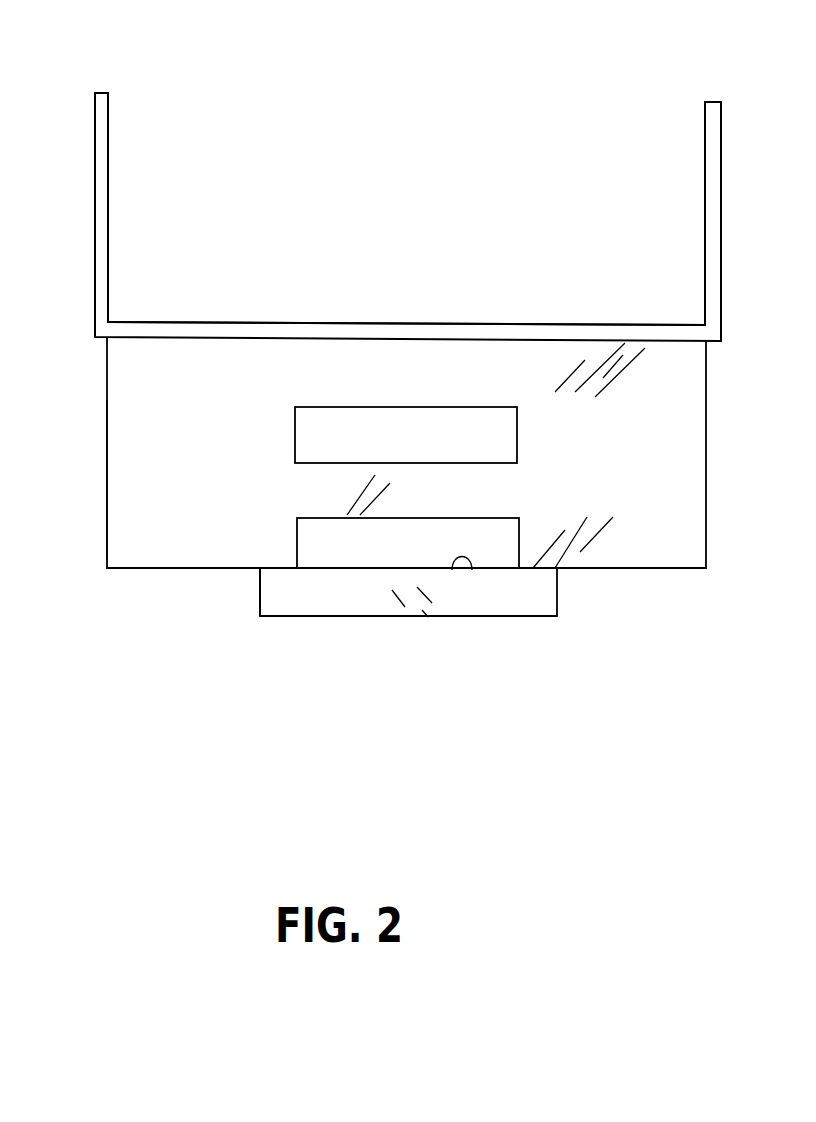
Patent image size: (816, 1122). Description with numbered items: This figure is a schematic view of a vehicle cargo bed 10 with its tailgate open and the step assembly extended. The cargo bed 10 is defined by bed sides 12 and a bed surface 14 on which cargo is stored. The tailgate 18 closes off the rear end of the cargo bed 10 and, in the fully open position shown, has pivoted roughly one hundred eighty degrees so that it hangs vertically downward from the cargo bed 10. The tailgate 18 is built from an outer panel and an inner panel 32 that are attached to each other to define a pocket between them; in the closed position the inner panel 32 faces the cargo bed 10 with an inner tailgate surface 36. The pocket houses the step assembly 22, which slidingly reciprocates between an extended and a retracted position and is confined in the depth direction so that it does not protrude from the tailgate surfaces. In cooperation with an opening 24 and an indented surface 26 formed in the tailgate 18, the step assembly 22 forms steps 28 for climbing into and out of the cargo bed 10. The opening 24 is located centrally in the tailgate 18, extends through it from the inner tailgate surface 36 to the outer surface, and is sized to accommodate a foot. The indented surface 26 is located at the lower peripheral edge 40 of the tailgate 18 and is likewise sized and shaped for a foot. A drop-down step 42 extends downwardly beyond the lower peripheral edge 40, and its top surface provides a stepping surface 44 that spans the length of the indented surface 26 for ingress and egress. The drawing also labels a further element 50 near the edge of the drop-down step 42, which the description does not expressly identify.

The cargo bed 10 is at (101, 93).
The bed sides 12 is at (110, 148).
The bed surface 14 is at (363, 323).
The tailgate 18 is at (133, 371).
The step assembly 22 is at (295, 702).
The opening 24 is at (405, 420).
The indented surface 26 is at (510, 517).
The steps 28 is at (487, 460).
The inner panel 32 is at (143, 443).
The inner tailgate surface 36 is at (140, 497).
The lower peripheral edge 40 is at (158, 567).
The drop-down step 42 is at (538, 598).
The stepping surface 44 is at (472, 570).
The plate edge 50 is at (280, 587).